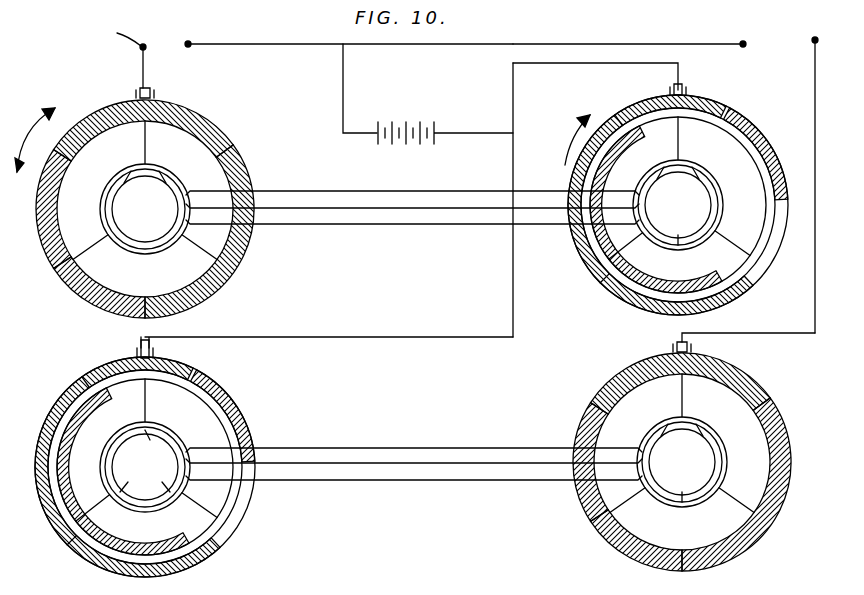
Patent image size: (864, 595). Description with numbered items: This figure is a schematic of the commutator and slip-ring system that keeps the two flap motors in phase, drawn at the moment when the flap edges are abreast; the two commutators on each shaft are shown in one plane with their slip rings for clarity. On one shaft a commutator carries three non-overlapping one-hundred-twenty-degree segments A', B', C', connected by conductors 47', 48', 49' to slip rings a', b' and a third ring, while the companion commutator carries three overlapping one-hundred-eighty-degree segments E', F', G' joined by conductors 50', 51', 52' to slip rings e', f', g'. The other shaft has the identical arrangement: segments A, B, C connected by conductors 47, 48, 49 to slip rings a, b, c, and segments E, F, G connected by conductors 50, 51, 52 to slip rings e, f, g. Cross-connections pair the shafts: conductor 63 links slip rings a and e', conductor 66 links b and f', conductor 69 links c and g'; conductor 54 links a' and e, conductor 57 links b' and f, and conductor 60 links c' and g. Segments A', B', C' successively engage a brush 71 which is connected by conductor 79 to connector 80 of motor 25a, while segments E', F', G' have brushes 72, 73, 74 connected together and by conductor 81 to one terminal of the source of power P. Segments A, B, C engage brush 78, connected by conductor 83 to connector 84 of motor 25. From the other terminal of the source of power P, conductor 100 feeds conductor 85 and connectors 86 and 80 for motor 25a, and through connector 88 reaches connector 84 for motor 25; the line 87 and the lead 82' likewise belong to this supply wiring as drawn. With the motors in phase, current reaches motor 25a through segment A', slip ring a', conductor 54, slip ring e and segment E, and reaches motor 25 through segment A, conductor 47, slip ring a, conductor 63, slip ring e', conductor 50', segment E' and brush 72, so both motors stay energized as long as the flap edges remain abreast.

The connector 80 is at (112, 31).
The motor 25a is at (176, 43).
The connector 86 is at (192, 43).
The conductor 85 is at (280, 44).
The conductor 87 is at (661, 44).
The connector 88 is at (741, 42).
The motor 25 is at (787, 40).
The connector 84 is at (828, 29).
The conductor 83 is at (817, 224).
The conductor 79 is at (141, 68).
The brush 71 is at (153, 97).
The commutator segment A' is at (147, 130).
The commutator segment B' is at (78, 234).
The commutator segment C' is at (192, 231).
The conductor 47' is at (164, 142).
The conductor 48' is at (91, 256).
The conductor 49' is at (192, 257).
The slip ring a' is at (126, 187).
The slip ring b' is at (157, 187).
The conductor 100 is at (344, 91).
The source of power P is at (445, 120).
The conductor 54 is at (402, 191).
The conductor 57 is at (366, 210).
The conductor 60 is at (417, 225).
The conductor 81 is at (304, 334).
The conductor 82' is at (599, 77).
The conductor 63 is at (302, 448).
The conductor 66 is at (347, 463).
The conductor 69 is at (386, 480).
The commutator segment E is at (756, 151).
The commutator segment F is at (644, 209).
The commutator segment G is at (669, 205).
The conductor 50 is at (698, 138).
The conductor 51 is at (630, 250).
The conductor 52 is at (732, 232).
The slip ring e is at (660, 184).
The slip ring f is at (693, 183).
The slip ring g is at (676, 230).
The brush 72 is at (112, 333).
The brush 73 is at (140, 350).
The brush 74 is at (112, 354).
The commutator segment E' is at (223, 413).
The commutator segment F' is at (106, 471).
The commutator segment G' is at (128, 473).
The conductor 50' is at (162, 400).
The conductor 51' is at (100, 513).
The conductor 52' is at (192, 511).
The slip ring e' is at (142, 441).
The slip ring f' is at (160, 478).
The slip ring g' is at (119, 478).
The brush 78 is at (694, 349).
The commutator segment A is at (686, 383).
The commutator segment B is at (627, 487).
The commutator segment C is at (736, 484).
The conductor 47 is at (701, 395).
The conductor 48 is at (629, 508).
The conductor 49 is at (732, 506).
The slip ring a is at (663, 438).
The slip ring b is at (696, 438).
The slip ring c is at (679, 487).